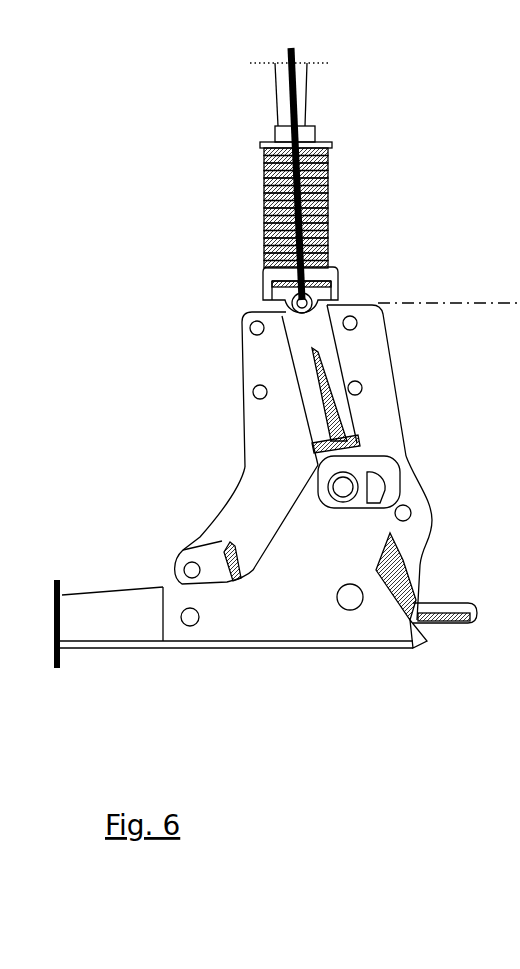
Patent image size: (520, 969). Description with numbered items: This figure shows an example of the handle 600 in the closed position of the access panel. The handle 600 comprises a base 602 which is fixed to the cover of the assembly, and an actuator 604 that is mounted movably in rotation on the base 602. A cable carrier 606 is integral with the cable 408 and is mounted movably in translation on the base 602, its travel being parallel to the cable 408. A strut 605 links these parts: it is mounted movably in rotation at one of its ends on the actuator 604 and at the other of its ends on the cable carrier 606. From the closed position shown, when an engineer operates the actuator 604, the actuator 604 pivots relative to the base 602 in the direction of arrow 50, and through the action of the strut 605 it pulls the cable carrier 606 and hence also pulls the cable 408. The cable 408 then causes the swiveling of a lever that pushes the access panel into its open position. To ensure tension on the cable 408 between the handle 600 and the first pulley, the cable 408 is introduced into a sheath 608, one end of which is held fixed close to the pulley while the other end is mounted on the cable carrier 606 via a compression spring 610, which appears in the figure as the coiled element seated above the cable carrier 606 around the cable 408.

The handle 600 is at (127, 205).
The base 602 is at (383, 432).
The actuator 604 is at (133, 618).
The strut 605 is at (332, 370).
The cable carrier 606 is at (318, 289).
The sheath 608 is at (280, 89).
The compression spring 610 is at (323, 182).
The cable 408 is at (297, 122).
The arrow 50 is at (220, 685).